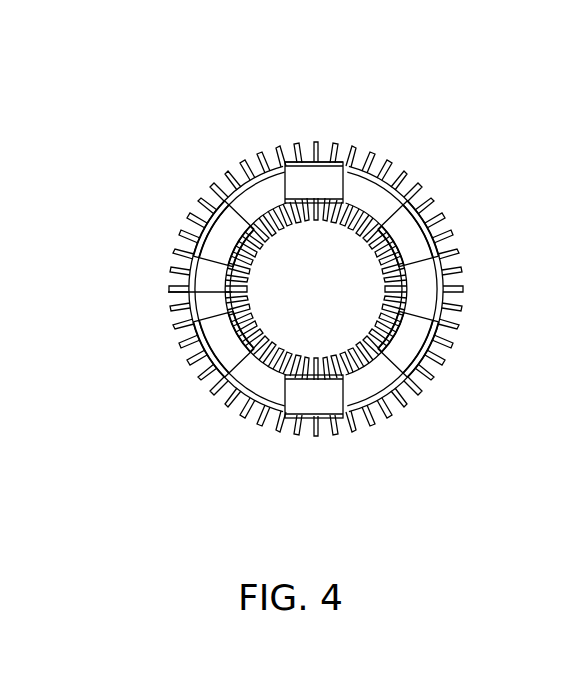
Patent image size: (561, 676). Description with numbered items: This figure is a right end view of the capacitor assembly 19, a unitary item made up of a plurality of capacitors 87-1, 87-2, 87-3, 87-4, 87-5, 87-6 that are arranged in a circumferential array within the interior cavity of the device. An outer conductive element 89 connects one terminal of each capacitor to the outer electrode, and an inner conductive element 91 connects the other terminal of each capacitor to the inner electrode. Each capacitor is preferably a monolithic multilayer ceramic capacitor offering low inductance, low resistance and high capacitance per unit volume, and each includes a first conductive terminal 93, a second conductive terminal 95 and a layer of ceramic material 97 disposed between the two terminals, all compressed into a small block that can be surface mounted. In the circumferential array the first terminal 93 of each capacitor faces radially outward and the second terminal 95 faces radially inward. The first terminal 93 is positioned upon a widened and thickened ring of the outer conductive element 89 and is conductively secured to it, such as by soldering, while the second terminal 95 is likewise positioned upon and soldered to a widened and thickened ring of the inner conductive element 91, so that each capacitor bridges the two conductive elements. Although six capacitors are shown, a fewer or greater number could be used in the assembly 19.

The capacitor assembly 19 is at (175, 474).
The capacitor 87-1 is at (335, 172).
The capacitor 87-2 is at (405, 235).
The capacitor 87-3 is at (412, 342).
The capacitor 87-4 is at (318, 393).
The capacitor 87-5 is at (219, 348).
The capacitor 87-6 is at (213, 226).
The outer conductive element 89 is at (413, 372).
The inner conductive element 91 is at (168, 292).
The first conductive terminal 93 is at (303, 163).
The second conductive terminal 95 is at (289, 222).
The layer of ceramic material 97 is at (292, 174).